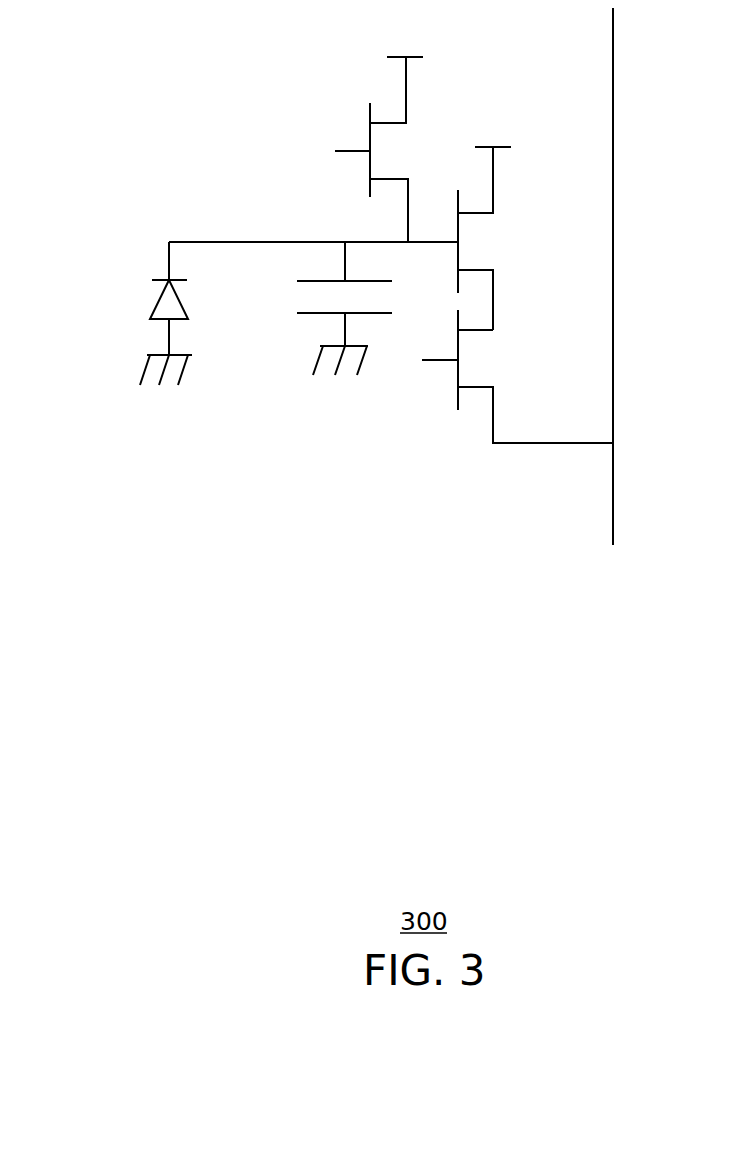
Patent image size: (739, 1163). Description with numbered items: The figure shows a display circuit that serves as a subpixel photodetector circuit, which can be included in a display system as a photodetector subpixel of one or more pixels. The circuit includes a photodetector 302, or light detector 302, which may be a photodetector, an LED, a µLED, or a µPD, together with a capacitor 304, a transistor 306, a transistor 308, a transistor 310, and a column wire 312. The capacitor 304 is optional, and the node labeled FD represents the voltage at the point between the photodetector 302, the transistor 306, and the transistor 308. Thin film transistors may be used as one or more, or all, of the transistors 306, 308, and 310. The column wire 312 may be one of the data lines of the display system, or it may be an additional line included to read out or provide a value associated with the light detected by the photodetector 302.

The photodetector 302 is at (158, 298).
The capacitor 304 is at (307, 316).
The transistor 306 is at (371, 150).
The transistor 308 is at (460, 250).
The transistor 310 is at (458, 372).
The column wire 312 is at (612, 87).